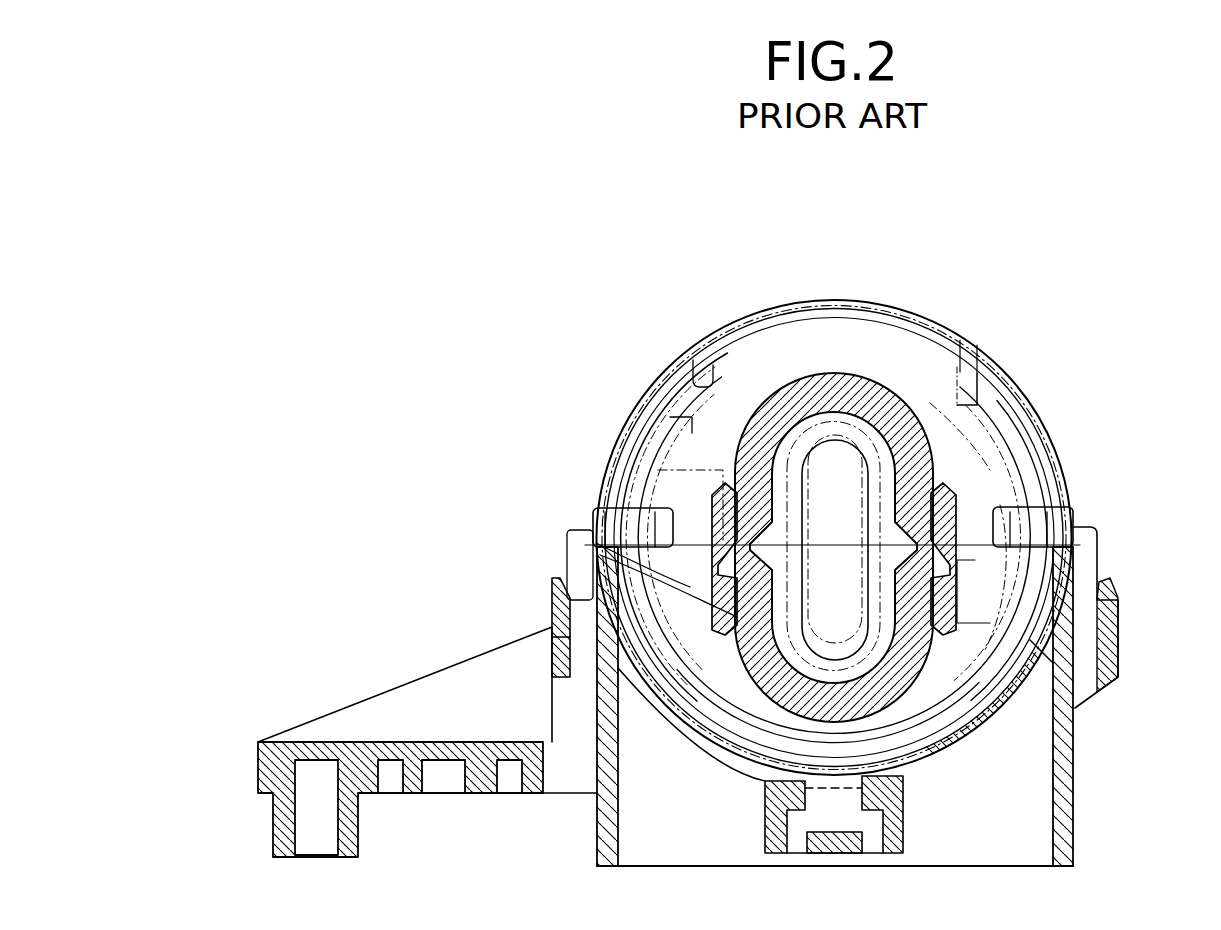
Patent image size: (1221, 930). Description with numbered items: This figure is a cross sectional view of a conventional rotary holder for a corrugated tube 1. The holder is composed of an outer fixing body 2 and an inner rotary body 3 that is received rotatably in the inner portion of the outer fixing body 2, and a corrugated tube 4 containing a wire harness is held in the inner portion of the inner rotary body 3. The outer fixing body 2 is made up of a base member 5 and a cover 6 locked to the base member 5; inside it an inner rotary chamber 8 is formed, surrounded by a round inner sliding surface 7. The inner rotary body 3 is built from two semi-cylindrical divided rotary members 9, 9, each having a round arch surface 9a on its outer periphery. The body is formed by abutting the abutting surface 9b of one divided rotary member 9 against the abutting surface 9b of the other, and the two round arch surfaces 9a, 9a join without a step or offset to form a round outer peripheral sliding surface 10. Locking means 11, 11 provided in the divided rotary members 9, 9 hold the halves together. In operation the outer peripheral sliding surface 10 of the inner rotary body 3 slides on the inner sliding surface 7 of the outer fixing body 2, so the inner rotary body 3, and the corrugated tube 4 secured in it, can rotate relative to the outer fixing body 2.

The rotary holder for a corrugated tube 1 is at (507, 373).
The outer fixing body 2 is at (907, 590).
The inner rotary body 3 is at (821, 464).
The corrugated tube 4 is at (870, 375).
The base member 5 is at (1125, 617).
The cover 6 is at (1085, 486).
The inner sliding surface 7 is at (904, 322).
The inner rotary chamber 8 is at (695, 370).
The divided rotary member 9 is at (770, 410).
The round arch surface 9a is at (953, 330).
The abutting surface 9b is at (1050, 487).
The outer peripheral sliding surface 10 is at (973, 345).
The locking means 11 is at (712, 590).